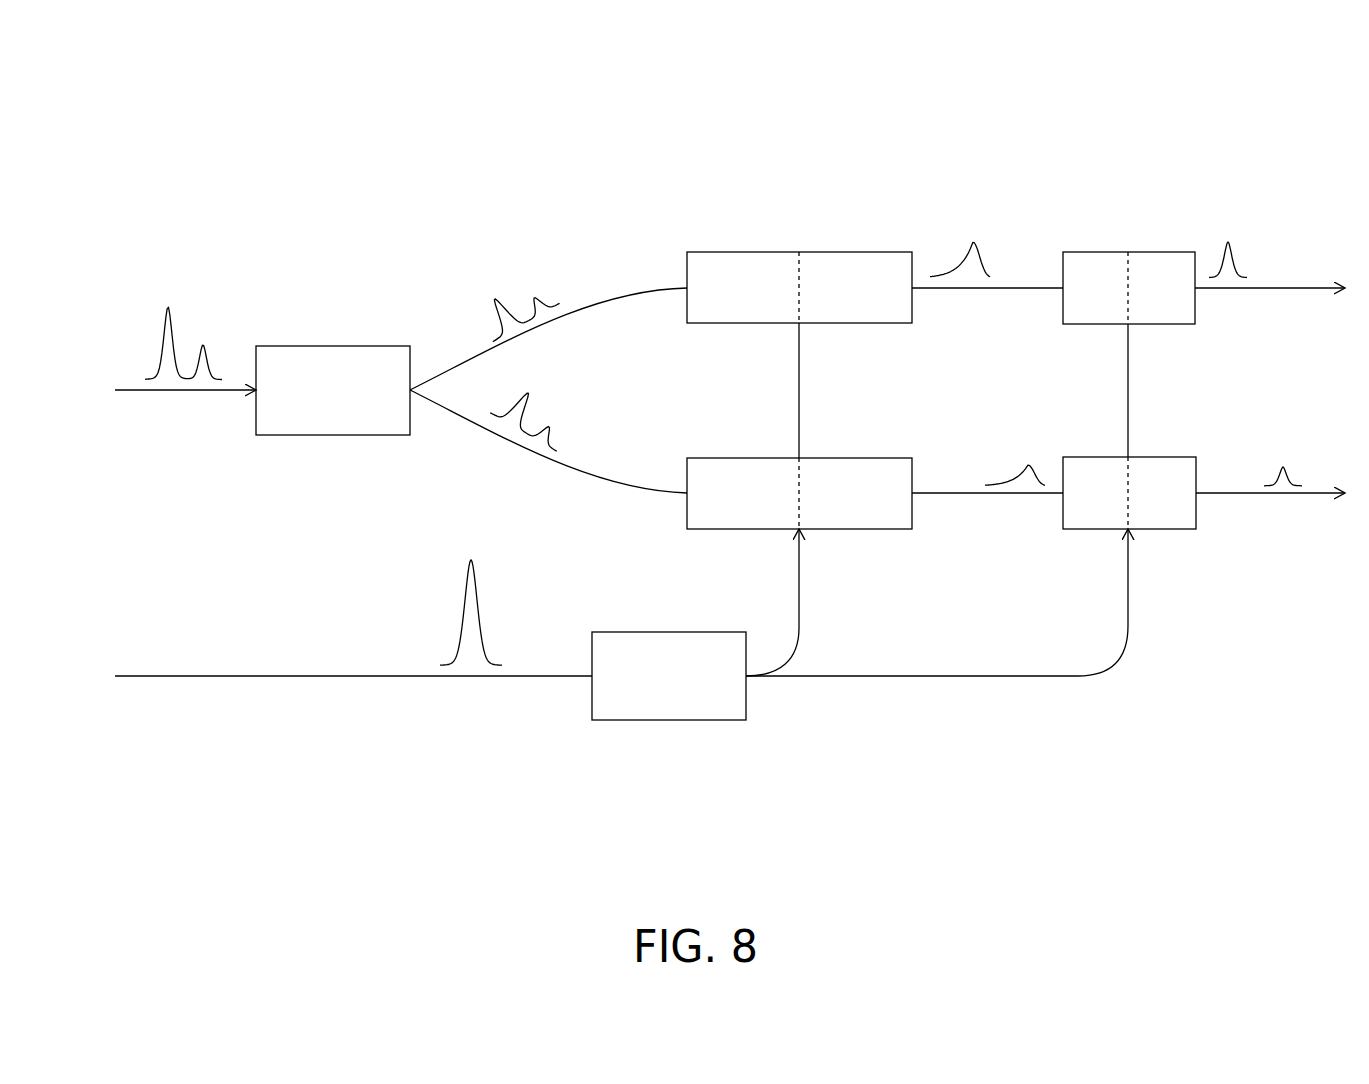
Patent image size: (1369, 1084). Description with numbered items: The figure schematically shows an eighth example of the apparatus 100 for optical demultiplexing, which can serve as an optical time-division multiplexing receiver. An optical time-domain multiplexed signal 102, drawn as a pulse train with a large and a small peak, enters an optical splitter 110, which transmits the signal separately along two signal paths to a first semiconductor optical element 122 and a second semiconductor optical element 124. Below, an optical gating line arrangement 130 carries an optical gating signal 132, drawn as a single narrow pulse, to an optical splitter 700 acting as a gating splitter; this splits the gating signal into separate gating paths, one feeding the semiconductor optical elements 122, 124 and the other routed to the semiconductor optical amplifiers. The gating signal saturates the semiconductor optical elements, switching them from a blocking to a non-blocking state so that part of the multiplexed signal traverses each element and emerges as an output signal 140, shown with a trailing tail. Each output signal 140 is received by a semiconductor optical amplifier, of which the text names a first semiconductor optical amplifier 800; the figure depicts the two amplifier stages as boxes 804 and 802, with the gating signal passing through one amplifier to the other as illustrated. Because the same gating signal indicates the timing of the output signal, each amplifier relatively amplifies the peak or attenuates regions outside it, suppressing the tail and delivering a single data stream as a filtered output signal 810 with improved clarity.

The apparatus 100 is at (1246, 111).
The optical time-domain multiplexed signal 102 is at (133, 323).
The optical splitter 110 is at (337, 333).
The second semiconductor optical element 124 is at (852, 225).
The first semiconductor optical element 122 is at (855, 545).
The first modulator 804 is at (1097, 237).
The second modulator 802 is at (1173, 550).
The first semiconductor optical amplifier 800 is at (1166, 447).
The output signal 140 is at (993, 253).
The filtered output signal 810 is at (1228, 227).
The optical splitter 700 is at (635, 612).
The optical gating line arrangement 130 is at (253, 690).
The optical gating signal 132 is at (433, 608).